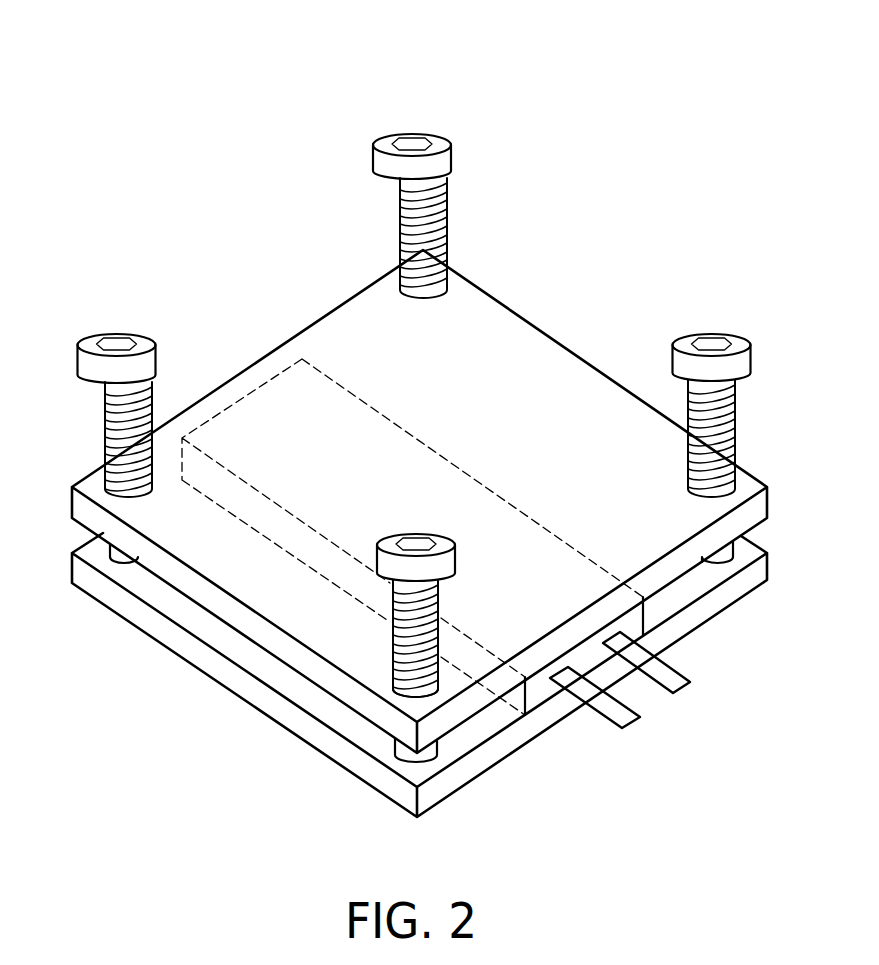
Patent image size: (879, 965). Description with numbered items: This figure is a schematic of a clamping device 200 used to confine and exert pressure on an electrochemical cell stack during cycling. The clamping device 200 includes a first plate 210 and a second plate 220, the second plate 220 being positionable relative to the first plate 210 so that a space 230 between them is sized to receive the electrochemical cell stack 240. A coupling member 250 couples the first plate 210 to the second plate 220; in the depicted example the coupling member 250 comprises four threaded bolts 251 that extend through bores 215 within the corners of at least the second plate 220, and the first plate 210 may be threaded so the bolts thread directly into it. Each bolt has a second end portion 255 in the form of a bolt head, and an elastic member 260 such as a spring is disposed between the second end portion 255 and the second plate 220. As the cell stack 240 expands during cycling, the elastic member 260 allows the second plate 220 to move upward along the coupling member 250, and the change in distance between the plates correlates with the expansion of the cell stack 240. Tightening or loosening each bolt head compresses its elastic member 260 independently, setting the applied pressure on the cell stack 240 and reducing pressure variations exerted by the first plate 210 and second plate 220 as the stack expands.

The clamping device 200 is at (705, 129).
The first plate 210 is at (150, 636).
The bores 215 is at (394, 690).
The second plate 220 is at (543, 355).
The space 230 is at (700, 596).
The electrochemical cell stack 240 is at (533, 692).
The coupling member 250 is at (343, 226).
The threaded bolts 251 is at (407, 762).
The second end portion 255 is at (379, 124).
The elastic member 260 is at (448, 230).